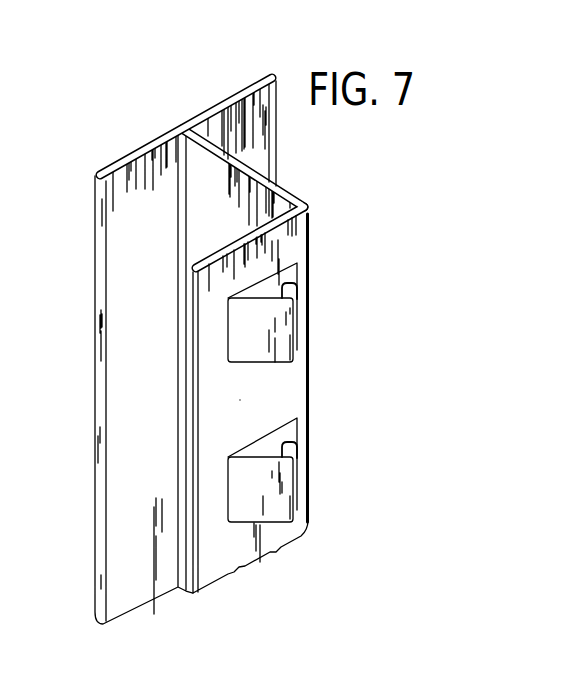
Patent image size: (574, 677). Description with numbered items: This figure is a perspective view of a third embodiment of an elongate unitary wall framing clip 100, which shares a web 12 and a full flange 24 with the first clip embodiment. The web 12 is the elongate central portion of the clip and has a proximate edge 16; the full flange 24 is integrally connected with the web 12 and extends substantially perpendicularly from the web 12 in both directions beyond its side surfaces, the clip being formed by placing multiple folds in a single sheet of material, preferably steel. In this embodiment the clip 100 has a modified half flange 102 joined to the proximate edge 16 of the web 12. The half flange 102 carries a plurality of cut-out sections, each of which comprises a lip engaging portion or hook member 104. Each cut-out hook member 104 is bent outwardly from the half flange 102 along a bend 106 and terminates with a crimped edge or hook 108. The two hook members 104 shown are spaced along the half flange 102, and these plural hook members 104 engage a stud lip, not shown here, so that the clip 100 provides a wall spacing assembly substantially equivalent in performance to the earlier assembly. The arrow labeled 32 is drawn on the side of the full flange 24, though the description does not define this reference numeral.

The wall framing clip 100 is at (211, 335).
The web 12 is at (242, 163).
The proximate edge 16 is at (298, 193).
The full flange 24 is at (197, 114).
The side flange 32 is at (162, 240).
The half flange 102 is at (280, 384).
The hook member 104 is at (278, 338).
The bend 106 is at (228, 476).
The hook 108 is at (292, 286).